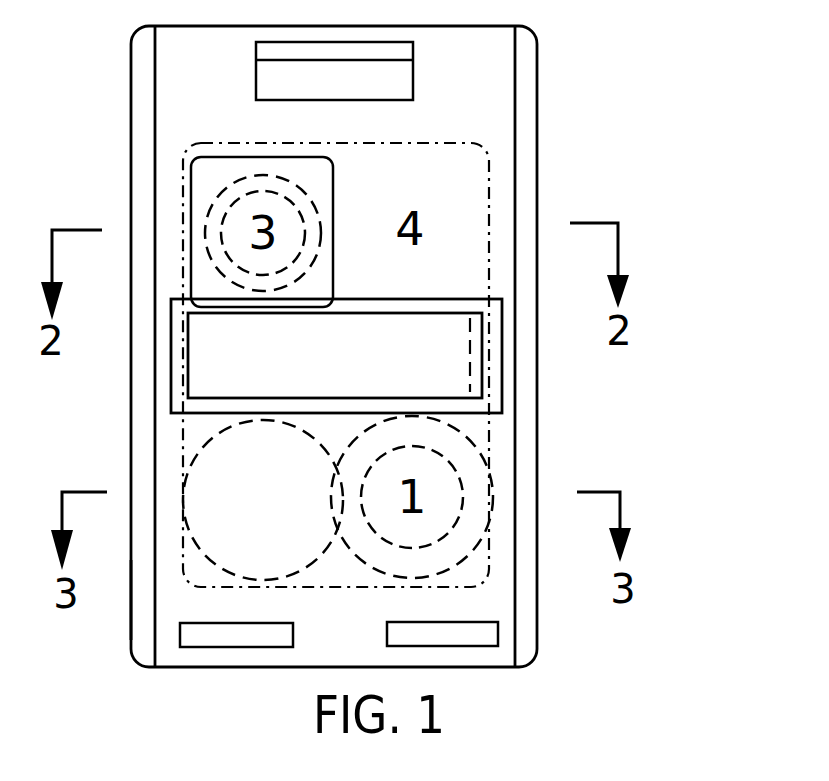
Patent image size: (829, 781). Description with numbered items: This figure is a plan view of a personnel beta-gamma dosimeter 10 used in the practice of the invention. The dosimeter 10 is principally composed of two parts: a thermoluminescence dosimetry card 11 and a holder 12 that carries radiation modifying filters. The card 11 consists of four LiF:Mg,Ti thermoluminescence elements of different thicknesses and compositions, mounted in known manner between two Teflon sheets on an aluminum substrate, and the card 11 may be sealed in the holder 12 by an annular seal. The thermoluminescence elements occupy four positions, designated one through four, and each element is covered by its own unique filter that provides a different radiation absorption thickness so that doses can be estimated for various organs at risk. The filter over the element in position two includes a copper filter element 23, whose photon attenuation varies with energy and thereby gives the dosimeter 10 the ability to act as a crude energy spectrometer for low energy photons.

The dosimeter 10 is at (550, 31).
The thermoluminescence dosimetry card 11 is at (187, 147).
The holder 12 is at (130, 633).
The copper filter element 23 is at (315, 565).